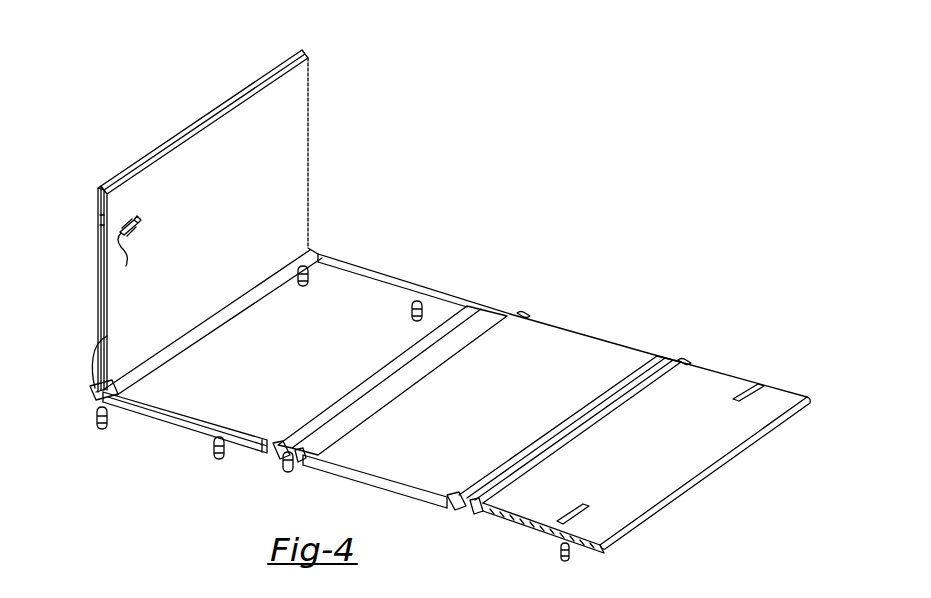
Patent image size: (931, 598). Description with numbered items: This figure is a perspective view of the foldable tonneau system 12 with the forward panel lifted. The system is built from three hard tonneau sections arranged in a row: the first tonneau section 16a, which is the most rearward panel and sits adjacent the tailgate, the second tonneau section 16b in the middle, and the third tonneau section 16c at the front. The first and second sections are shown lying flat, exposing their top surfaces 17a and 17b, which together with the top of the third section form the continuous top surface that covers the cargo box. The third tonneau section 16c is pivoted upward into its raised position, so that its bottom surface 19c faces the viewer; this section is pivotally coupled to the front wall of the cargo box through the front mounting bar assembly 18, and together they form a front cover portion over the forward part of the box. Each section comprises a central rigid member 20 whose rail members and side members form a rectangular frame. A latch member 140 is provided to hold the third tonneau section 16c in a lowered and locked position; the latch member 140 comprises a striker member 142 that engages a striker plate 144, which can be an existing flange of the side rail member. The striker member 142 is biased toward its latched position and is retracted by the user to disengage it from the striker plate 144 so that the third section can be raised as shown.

The foldable tonneau system 12 is at (548, 228).
The first tonneau section 16a is at (712, 385).
The second tonneau section 16b is at (570, 348).
The third tonneau section 16c is at (287, 187).
The top surface of first tonneau section 17a is at (618, 476).
The top surface of second tonneau section 17b is at (485, 409).
The front mounting bar assembly 18 is at (99, 336).
The bottom surface of third tonneau section 19c is at (244, 167).
The central rigid member 20 is at (597, 414).
The latch member 140 is at (138, 226).
The striker member 142 is at (137, 259).
The striker plate 144 is at (210, 432).